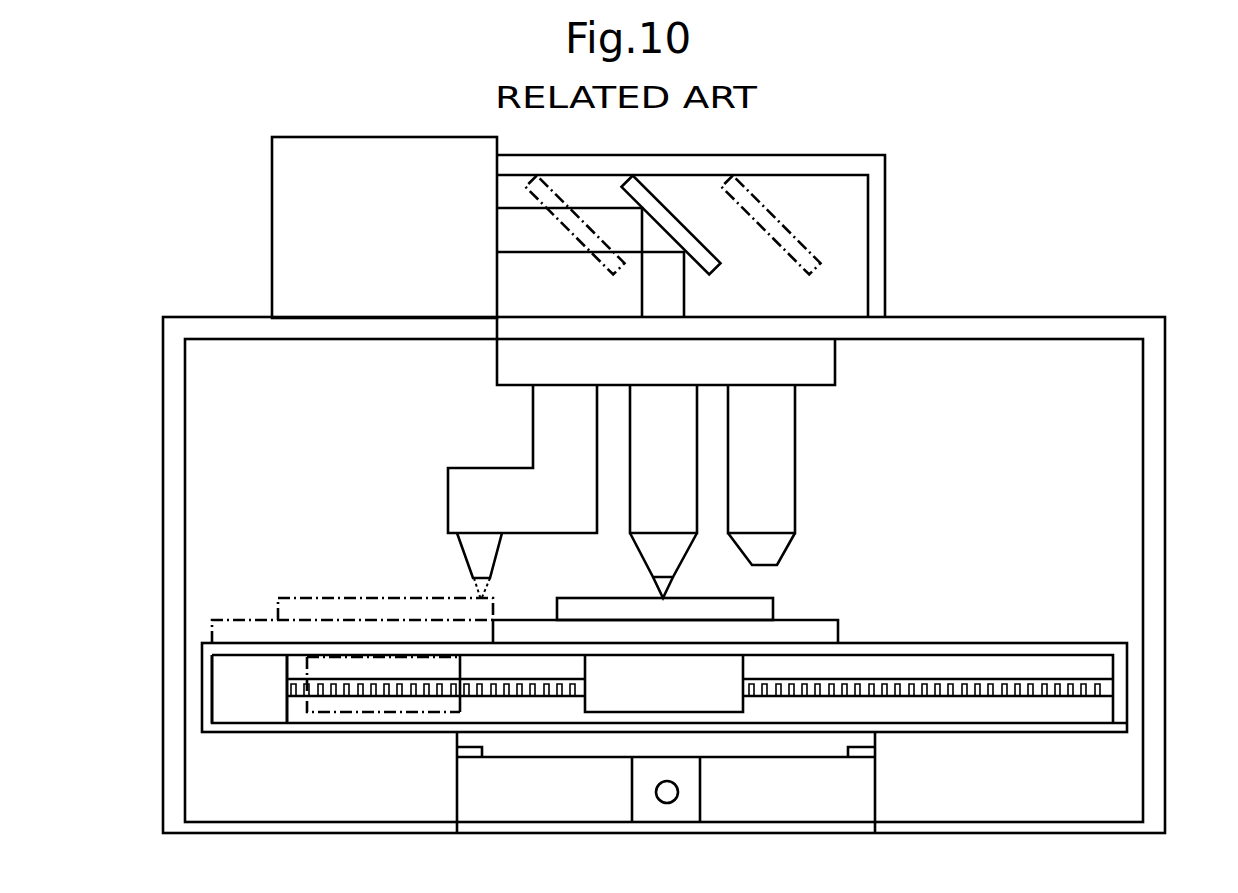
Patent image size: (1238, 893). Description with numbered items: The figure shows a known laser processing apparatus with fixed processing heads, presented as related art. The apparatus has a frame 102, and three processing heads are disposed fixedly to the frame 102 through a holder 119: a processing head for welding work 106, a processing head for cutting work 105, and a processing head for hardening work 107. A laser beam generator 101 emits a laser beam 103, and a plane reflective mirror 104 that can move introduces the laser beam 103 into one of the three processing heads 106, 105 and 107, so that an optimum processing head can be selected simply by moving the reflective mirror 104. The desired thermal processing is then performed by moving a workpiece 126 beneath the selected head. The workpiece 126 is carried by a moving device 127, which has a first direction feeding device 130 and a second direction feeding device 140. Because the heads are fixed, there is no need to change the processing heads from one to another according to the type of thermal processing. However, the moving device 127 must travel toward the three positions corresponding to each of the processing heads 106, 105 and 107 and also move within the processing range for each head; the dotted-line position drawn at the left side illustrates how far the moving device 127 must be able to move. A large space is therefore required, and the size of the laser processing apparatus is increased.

The laser beam generator 101 is at (283, 215).
The frame 102 is at (1160, 360).
The laser beam 103 is at (517, 207).
The plane reflective mirror 104 is at (675, 217).
The processing head for cutting work 105 is at (643, 550).
The processing head for welding work 106 is at (450, 493).
The processing head for hardening work 107 is at (795, 440).
The holder 119 is at (497, 367).
The workpiece 126 is at (773, 612).
The moving device 127 is at (853, 644).
The first direction feeding device 130 is at (249, 718).
The second direction feeding device 140 is at (658, 817).